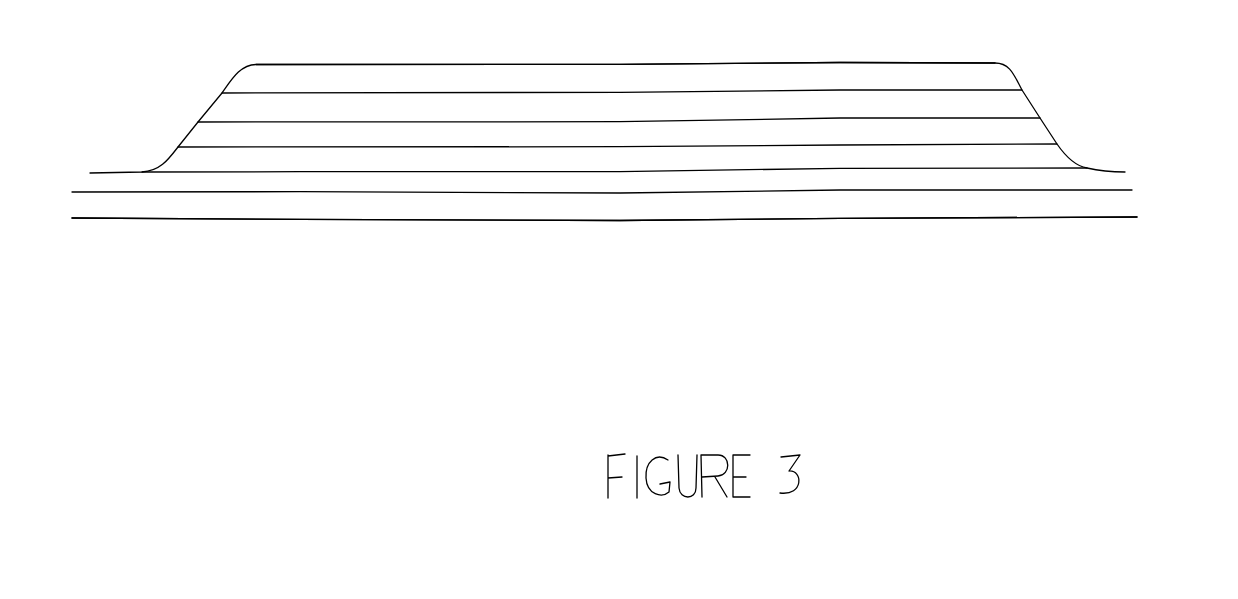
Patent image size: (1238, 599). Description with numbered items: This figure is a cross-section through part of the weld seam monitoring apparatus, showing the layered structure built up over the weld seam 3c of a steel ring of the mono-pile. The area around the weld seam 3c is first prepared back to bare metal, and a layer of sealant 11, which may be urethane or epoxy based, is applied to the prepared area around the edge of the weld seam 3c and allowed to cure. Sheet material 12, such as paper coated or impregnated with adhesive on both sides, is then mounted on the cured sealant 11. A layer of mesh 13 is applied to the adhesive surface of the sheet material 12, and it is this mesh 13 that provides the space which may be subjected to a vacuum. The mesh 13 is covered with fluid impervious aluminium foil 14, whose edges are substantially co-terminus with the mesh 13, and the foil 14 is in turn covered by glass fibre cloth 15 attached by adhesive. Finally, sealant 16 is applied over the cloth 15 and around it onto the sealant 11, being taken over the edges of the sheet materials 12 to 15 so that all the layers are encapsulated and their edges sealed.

The layer of sealant 11 is at (1132, 190).
The sheet material 12 is at (502, 148).
The mesh 13 is at (563, 147).
The aluminium foil 14 is at (619, 122).
The glass fibre cloth 15 is at (673, 93).
The sealant 16 is at (727, 65).
The weld seam 3c is at (1018, 217).